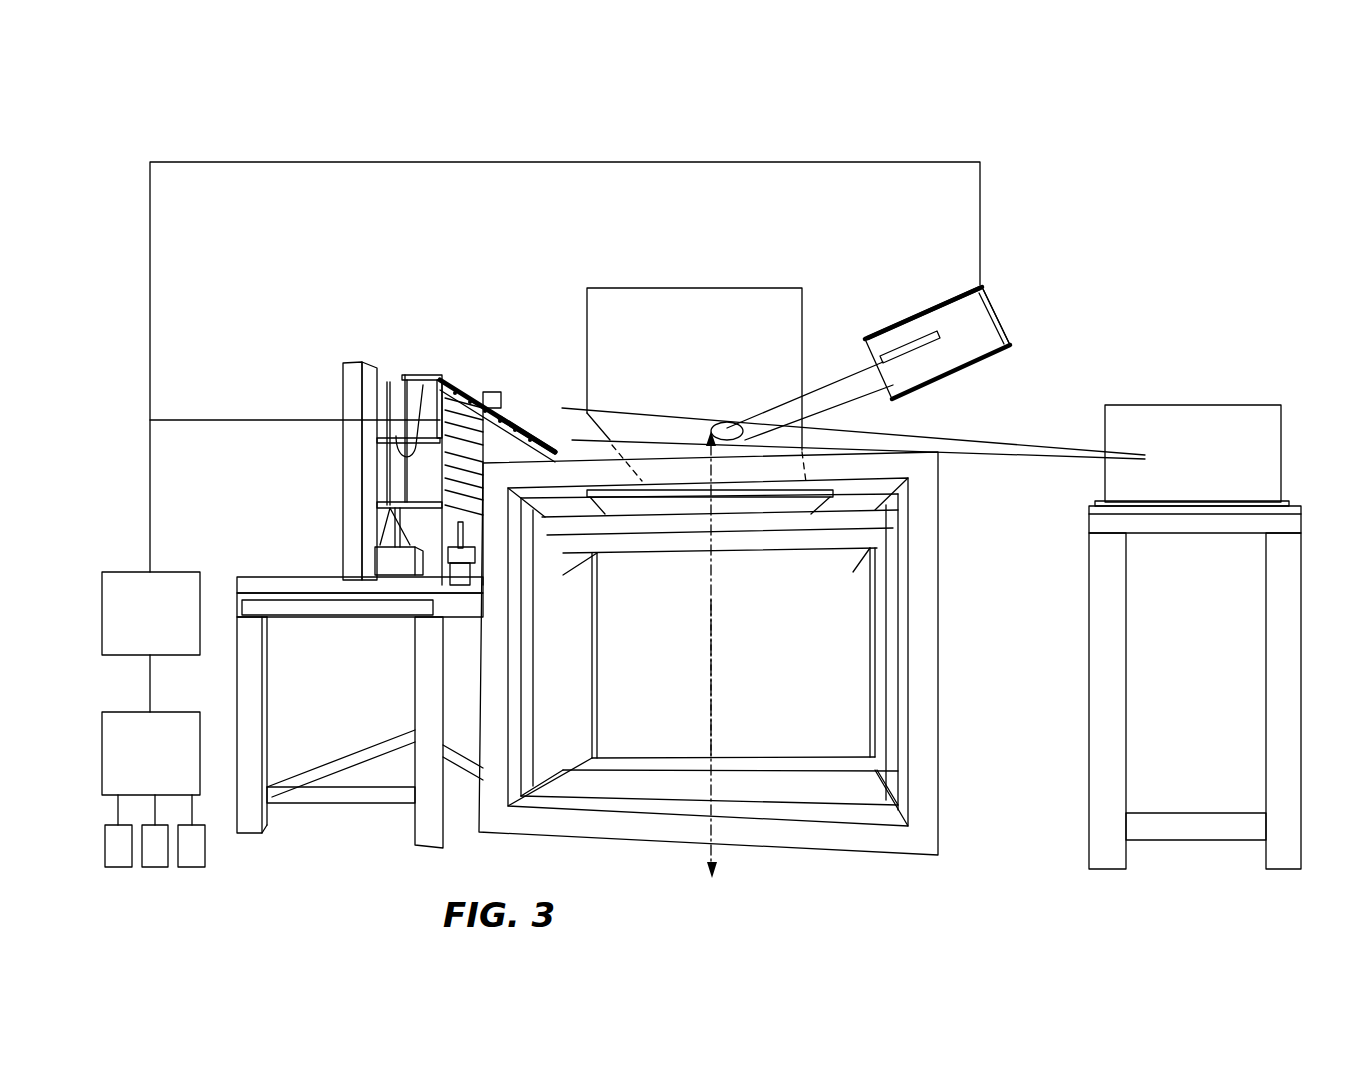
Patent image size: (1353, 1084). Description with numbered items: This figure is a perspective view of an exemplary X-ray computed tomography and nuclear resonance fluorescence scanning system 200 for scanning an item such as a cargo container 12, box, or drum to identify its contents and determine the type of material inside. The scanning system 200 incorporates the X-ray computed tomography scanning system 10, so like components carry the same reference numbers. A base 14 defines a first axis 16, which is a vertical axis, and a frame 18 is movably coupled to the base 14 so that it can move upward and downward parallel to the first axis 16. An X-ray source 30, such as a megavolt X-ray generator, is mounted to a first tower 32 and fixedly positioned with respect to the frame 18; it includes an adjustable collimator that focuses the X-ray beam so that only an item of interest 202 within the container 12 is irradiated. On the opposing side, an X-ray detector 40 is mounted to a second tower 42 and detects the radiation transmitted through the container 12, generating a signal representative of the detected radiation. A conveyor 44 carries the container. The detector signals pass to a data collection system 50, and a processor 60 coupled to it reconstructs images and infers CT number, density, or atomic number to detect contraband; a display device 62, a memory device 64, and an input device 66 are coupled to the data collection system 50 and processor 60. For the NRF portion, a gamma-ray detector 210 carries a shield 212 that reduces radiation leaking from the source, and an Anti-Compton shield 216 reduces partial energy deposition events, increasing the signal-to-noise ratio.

The X-ray computed tomography and nuclear resonance fluorescence scanning system 200 is at (248, 140).
The X-ray computed tomography scanning system 10 is at (275, 483).
The cargo container 12 is at (587, 288).
The item of interest 202 is at (722, 422).
The Anti-Compton shield 216 is at (926, 313).
The gamma-ray detector 210 is at (988, 300).
The shield 212 is at (1006, 334).
The conveyor 44 is at (463, 430).
The X-ray detector 40 is at (530, 437).
The X-ray source 30 is at (1176, 466).
The first tower 32 is at (1106, 682).
The base 14 is at (920, 715).
The frame 18 is at (674, 526).
The first axis 16 is at (716, 680).
The second tower 42 is at (250, 683).
The data collection system 50 is at (137, 626).
The processor 60 is at (137, 766).
The display device 62 is at (118, 867).
The memory device 64 is at (157, 867).
The input device 66 is at (192, 867).